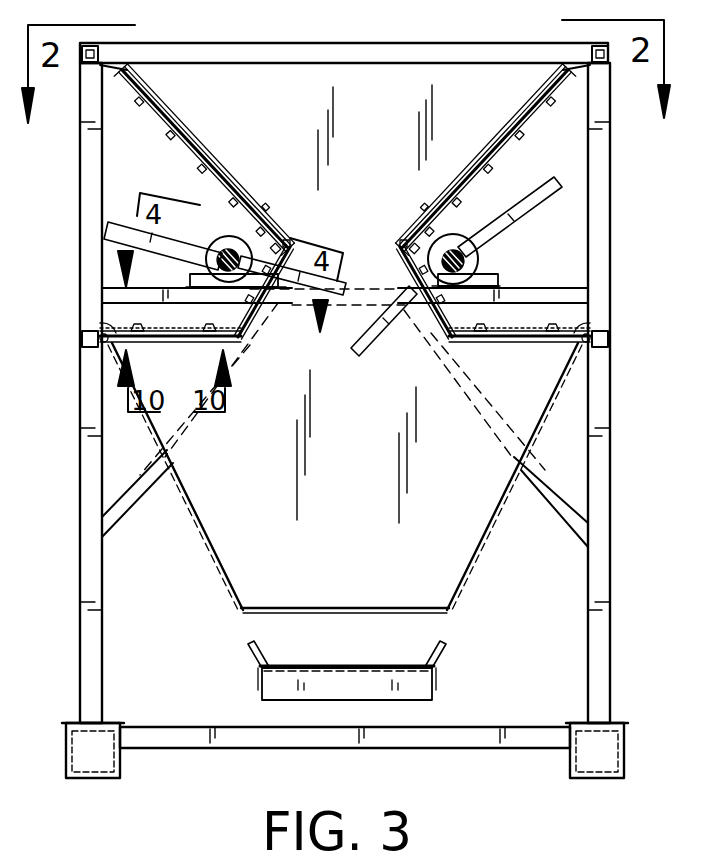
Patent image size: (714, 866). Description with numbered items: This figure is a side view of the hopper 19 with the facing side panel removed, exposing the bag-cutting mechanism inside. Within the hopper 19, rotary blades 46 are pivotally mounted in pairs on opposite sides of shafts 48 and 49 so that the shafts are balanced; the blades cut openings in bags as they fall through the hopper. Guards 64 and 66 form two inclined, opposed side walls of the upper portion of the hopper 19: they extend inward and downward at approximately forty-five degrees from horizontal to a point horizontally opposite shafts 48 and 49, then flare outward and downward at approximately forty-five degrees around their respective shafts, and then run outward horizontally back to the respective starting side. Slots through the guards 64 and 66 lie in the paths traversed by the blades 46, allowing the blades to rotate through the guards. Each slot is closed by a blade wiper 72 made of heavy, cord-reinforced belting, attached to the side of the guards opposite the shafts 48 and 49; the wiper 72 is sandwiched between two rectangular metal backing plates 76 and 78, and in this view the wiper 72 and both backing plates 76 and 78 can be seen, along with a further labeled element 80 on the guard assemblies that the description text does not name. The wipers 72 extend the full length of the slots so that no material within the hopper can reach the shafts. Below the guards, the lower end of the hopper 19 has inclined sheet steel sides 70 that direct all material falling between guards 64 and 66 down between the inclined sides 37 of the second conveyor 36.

The hopper 19 is at (355, 44).
The second conveyor 36 is at (352, 665).
The inclined sides 37 is at (250, 649).
The rotary blades 46 is at (170, 248).
The shaft 48 is at (203, 268).
The shaft 49 is at (482, 272).
The guard 64 is at (183, 144).
The guard 66 is at (490, 154).
The inclined sheet steel sides 70 is at (204, 534).
The blade wiper 72 is at (229, 170).
The backing plate 76 is at (258, 206).
The backing plate 78 is at (163, 100).
The door liner strip 80 is at (187, 122).